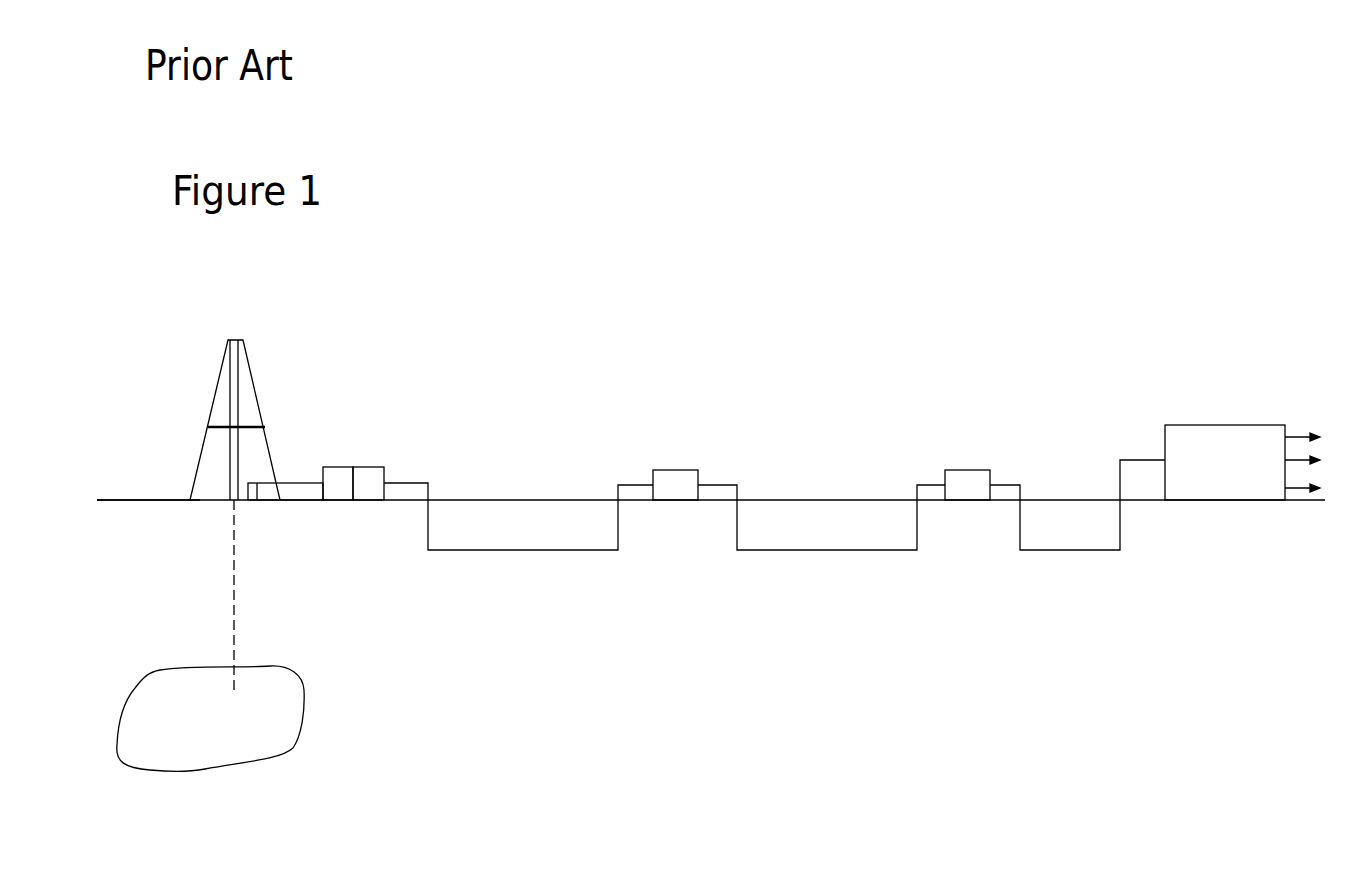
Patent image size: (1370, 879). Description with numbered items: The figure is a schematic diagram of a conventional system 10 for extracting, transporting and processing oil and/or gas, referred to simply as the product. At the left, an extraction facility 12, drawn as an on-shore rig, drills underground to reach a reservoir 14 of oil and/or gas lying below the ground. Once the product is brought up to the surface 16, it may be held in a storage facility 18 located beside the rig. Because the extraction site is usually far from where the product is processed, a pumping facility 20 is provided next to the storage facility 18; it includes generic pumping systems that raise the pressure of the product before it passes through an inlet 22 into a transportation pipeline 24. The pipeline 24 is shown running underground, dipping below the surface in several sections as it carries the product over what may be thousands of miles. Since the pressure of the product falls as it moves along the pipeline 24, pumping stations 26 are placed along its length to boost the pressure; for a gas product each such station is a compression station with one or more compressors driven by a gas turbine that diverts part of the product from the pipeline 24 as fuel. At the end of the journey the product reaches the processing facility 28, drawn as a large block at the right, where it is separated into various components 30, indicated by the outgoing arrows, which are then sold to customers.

The system 10 is at (713, 276).
The extraction facility 12 is at (215, 388).
The reservoir 14 is at (198, 772).
The surface 16 is at (137, 498).
The storage facility 18 is at (345, 467).
The pumping facility 20 is at (363, 467).
The inlet 22 is at (400, 483).
The transportation pipeline 24 is at (500, 551).
The pumping stations 26 is at (675, 470).
The processing facility 28 is at (1212, 425).
The components 30 is at (1290, 437).